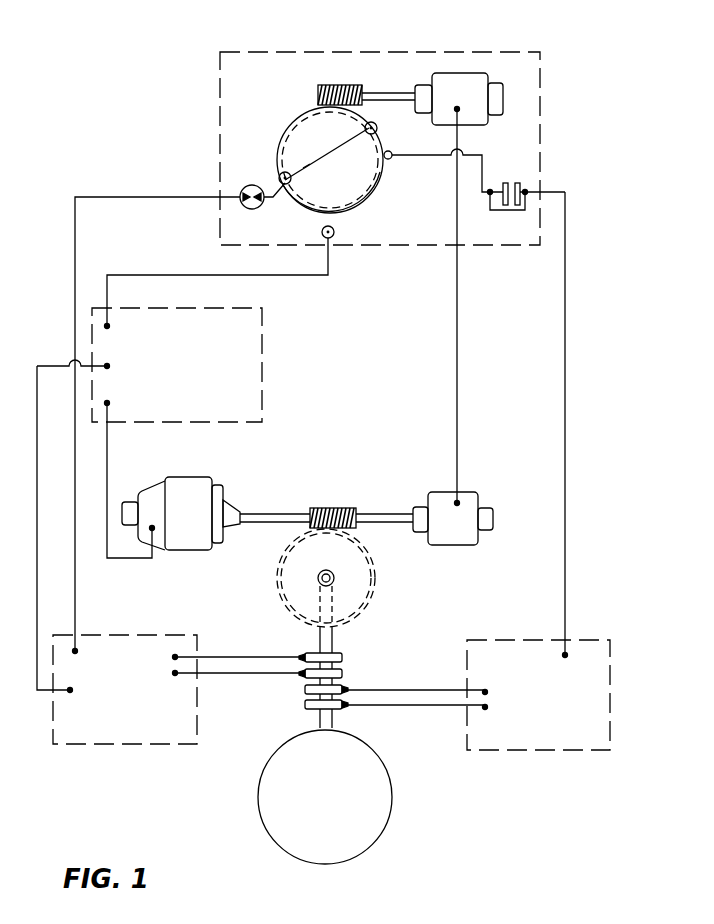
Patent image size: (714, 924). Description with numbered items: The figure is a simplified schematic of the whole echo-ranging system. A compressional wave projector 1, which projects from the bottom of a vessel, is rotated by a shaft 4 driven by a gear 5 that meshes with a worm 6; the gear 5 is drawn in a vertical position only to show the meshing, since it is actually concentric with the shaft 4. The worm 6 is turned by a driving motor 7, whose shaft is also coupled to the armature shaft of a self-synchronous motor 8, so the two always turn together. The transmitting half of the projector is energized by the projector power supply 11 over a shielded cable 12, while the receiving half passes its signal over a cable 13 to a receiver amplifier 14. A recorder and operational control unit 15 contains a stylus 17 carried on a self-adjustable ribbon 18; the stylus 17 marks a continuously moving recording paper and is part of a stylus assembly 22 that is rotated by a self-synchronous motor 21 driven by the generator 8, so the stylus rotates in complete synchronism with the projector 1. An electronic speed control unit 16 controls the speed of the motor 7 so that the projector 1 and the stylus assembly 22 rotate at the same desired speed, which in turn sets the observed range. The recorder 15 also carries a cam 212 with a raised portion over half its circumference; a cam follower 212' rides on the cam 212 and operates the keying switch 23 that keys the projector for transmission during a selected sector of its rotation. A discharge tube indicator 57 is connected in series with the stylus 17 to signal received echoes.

The compressional wave projector 1 is at (388, 798).
The shaft 4 is at (333, 644).
The gear 5 is at (375, 582).
The worm 6 is at (322, 510).
The driving motor 7 is at (178, 482).
The self-synchronous motor 8 is at (468, 498).
The projector power supply 11 is at (582, 648).
The shielded cable 12 is at (398, 689).
The cable 13 is at (253, 655).
The receiver amplifier 14 is at (120, 737).
The recorder and operational control unit 15 is at (373, 60).
The speed control unit 16 is at (253, 333).
The stylus 17 is at (328, 153).
The self-adjustable ribbon 18 is at (303, 173).
The self-synchronous motor 21 is at (443, 78).
The stylus assembly 22 is at (292, 123).
The cam key 23 is at (512, 178).
The discharge tube indicator 57 is at (248, 185).
The cam 212 is at (346, 200).
The cam follower 212' is at (414, 171).